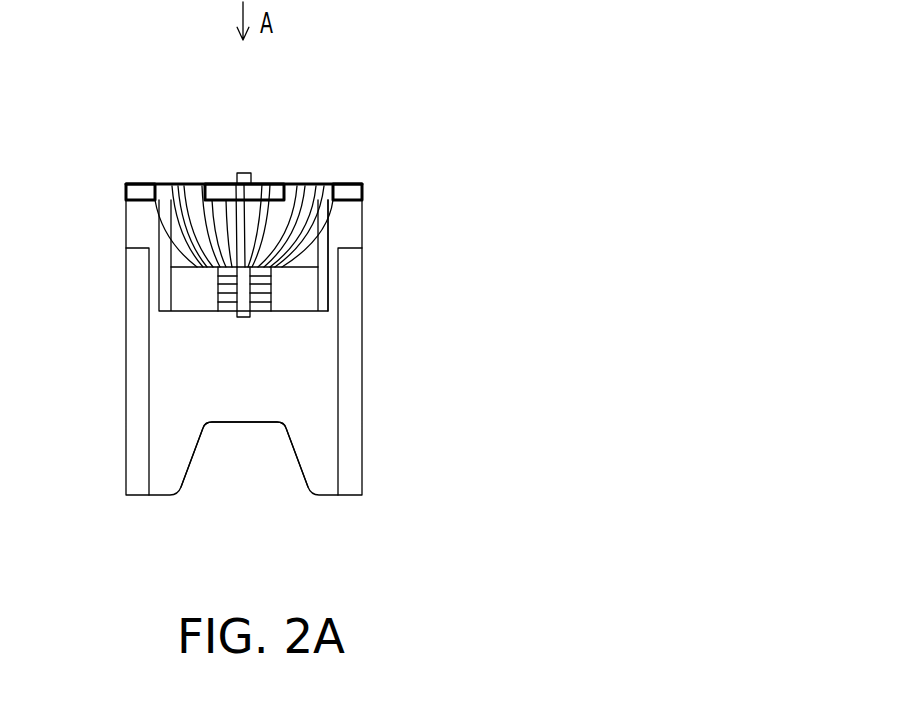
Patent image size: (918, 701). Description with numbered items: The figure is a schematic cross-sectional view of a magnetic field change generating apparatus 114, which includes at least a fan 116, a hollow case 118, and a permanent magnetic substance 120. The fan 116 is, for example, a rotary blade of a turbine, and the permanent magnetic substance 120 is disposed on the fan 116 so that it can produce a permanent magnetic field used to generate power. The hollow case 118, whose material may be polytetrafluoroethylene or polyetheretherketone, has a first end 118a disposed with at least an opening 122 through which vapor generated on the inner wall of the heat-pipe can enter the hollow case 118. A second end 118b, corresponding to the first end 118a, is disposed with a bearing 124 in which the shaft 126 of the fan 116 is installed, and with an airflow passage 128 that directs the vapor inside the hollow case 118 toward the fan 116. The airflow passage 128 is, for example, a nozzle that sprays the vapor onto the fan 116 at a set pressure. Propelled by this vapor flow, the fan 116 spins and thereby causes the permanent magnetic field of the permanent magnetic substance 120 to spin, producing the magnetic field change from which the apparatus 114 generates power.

The magnetic field change generating apparatus 114 is at (95, 183).
The fan 116 is at (331, 211).
The hollow case 118 is at (345, 425).
The first end 118a is at (371, 455).
The second end 118b is at (371, 250).
The permanent magnetic substance 120 is at (347, 186).
The opening 122 is at (205, 466).
The bearing 124 is at (257, 298).
The shaft 126 is at (246, 174).
The airflow passage 128 is at (331, 262).